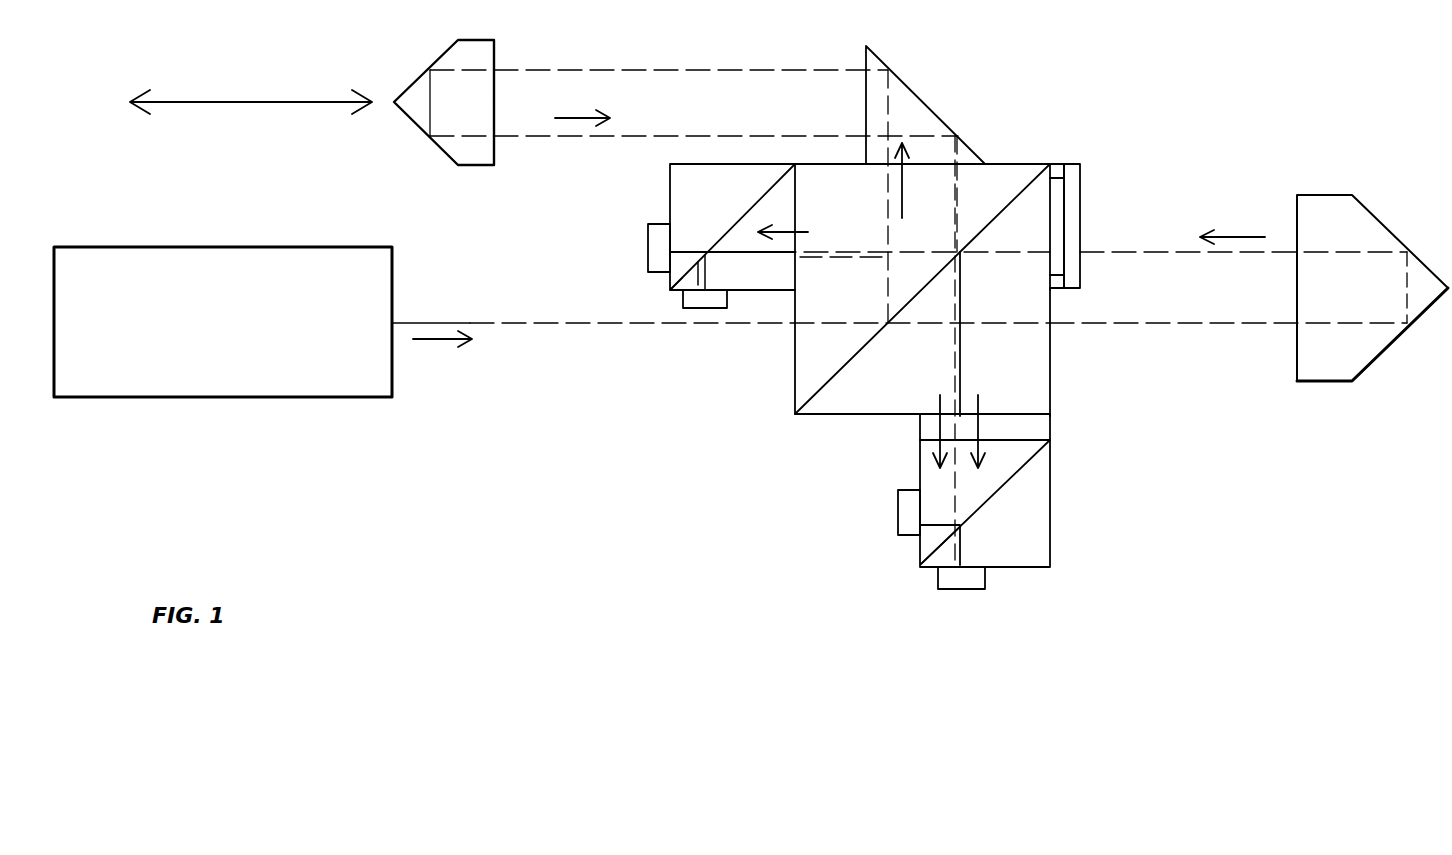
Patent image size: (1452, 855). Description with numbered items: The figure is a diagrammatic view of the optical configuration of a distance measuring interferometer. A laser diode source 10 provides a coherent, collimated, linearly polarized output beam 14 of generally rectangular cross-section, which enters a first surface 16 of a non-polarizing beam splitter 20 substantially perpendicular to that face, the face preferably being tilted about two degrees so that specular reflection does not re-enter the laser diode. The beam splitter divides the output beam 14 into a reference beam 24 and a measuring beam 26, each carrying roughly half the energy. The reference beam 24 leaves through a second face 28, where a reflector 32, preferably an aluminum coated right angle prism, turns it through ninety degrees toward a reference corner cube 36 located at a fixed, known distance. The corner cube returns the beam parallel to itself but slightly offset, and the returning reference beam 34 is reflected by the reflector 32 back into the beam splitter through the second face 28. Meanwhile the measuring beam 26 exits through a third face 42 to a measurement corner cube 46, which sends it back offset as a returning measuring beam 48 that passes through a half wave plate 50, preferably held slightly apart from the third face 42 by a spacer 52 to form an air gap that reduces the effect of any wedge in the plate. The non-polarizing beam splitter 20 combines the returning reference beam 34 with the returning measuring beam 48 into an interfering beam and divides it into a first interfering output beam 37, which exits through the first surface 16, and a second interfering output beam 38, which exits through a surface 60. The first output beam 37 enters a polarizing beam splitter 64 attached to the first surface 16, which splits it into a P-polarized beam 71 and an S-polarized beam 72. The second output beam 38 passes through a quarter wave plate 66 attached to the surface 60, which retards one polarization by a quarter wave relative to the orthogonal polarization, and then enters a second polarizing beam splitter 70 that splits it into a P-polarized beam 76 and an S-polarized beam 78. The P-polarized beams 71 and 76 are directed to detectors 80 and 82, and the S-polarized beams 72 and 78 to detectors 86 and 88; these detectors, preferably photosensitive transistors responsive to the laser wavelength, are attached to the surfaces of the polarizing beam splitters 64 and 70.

The laser diode source 10 is at (222, 246).
The collimated polarized output beam 14 is at (440, 321).
The first surface 16 is at (795, 358).
The non-polarizing beam splitter 20 is at (1011, 163).
The reference beam 24 is at (658, 70).
The measuring beam 26 is at (1237, 326).
The second face 28 is at (805, 162).
The reflector 32 is at (914, 88).
The returning reference beam 34 is at (558, 136).
The reference corner cube 36 is at (412, 92).
The first interfering output beam 37 is at (836, 256).
The second interfering output beam 38 is at (954, 336).
The third face 42 is at (1052, 385).
The measurement corner cube 46 is at (1392, 236).
The returning measuring beam 48 is at (1117, 250).
The half wave plate 50 is at (1082, 204).
The spacer 52 is at (1058, 163).
The surface 60 is at (838, 418).
The polarizing beam splitter 64 is at (668, 188).
The quarter wave plate 66 is at (1052, 440).
The second polarizing beam splitter 70 is at (1052, 520).
The P-polarized beam 71 is at (702, 256).
The S-polarized beam 72 is at (680, 278).
The P-polarized beam 76 is at (965, 556).
The S-polarized beam 78 is at (930, 540).
The detector 80 is at (648, 248).
The detector 82 is at (965, 592).
The detector 86 is at (728, 300).
The detector 88 is at (897, 498).